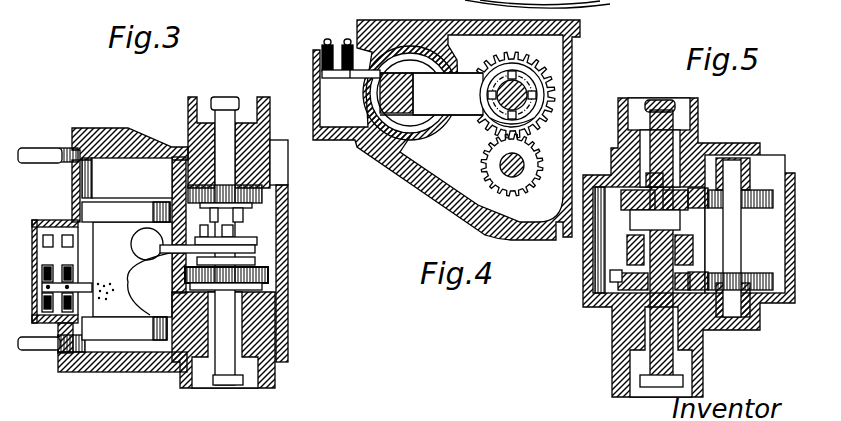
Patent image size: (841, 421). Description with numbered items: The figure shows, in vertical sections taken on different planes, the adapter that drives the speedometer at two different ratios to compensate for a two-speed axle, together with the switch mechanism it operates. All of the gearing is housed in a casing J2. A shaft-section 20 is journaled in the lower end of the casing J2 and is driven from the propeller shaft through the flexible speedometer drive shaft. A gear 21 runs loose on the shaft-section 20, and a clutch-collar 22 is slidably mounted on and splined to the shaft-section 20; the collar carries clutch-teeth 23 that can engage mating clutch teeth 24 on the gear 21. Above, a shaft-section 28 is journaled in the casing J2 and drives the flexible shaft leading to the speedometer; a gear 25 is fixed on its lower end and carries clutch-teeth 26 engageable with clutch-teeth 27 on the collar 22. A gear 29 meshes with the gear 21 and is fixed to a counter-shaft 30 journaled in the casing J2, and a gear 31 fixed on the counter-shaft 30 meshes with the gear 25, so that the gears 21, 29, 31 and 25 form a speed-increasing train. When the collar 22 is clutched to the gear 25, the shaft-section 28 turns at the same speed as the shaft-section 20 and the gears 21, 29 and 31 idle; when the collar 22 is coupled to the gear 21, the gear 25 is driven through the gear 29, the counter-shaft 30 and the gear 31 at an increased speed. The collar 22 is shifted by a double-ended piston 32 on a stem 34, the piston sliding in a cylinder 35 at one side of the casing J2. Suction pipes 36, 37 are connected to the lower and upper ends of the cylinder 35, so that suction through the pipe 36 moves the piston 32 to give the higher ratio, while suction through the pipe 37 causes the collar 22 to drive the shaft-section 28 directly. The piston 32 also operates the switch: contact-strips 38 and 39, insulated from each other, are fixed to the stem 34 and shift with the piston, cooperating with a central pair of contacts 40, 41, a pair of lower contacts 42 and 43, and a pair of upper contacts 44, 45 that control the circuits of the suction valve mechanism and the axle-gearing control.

In FIG. 3, the shaft-section 20 is at (232, 327).
In FIG. 5, the shaft-section 20 is at (658, 378).
In FIG. 3, the gear 21 is at (270, 275).
In FIG. 4, the gear 21 is at (540, 122).
In FIG. 5, the gear 21 is at (622, 290).
In FIG. 3, the clutch-collar 22 is at (262, 249).
In FIG. 4, the clutch-collar 22 is at (548, 88).
In FIG. 5, the clutch-collar 22 is at (620, 276).
In FIG. 3, the clutch-teeth 23 is at (262, 288).
In FIG. 3, the clutch teeth 24 is at (256, 261).
In FIG. 5, the clutch teeth 24 is at (698, 274).
In FIG. 3, the gear 25 is at (262, 194).
In FIG. 5, the gear 25 is at (613, 183).
In FIG. 3, the clutch-teeth 26 is at (250, 212).
In FIG. 5, the clutch-teeth 26 is at (633, 204).
In FIG. 3, the clutch-teeth 27 is at (258, 240).
In FIG. 4, the clutch-teeth 27 is at (538, 96).
In FIG. 5, the clutch-teeth 27 is at (680, 236).
In FIG. 3, the shaft-section 28 is at (232, 152).
In FIG. 4, the shaft-section 28 is at (535, 103).
In FIG. 5, the shaft-section 28 is at (680, 143).
In FIG. 4, the gear 29 is at (497, 182).
In FIG. 5, the gear 29 is at (756, 273).
In FIG. 4, the counter-shaft 30 is at (513, 178).
In FIG. 5, the counter-shaft 30 is at (743, 210).
In FIG. 5, the gear 31 is at (760, 176).
In FIG. 3, the double-ended piston 32 is at (126, 271).
In FIG. 4, the double-ended piston 32 is at (430, 138).
In FIG. 3, the stem 34 is at (151, 271).
In FIG. 3, the cylinder 35 is at (132, 178).
In FIG. 3, the suction pipe 36 is at (36, 351).
In FIG. 3, the suction pipe 37 is at (40, 146).
In FIG. 3, the contact-strip 38 is at (42, 288).
In FIG. 4, the contact-strip 38 is at (322, 73).
In FIG. 3, the contact-strip 39 is at (72, 274).
In FIG. 4, the contact-strip 39 is at (350, 78).
In FIG. 3, the central contact 40 is at (44, 266).
In FIG. 4, the central contact 40 is at (322, 60).
In FIG. 3, the central contact 41 is at (68, 268).
In FIG. 4, the central contact 41 is at (374, 60).
In FIG. 3, the lower contact 42 is at (40, 318).
In FIG. 3, the lower contact 43 is at (54, 334).
In FIG. 3, the upper contact 44 is at (46, 223).
In FIG. 3, the upper contact 45 is at (60, 221).
In FIG. 3, the casing J2 is at (102, 128).
In FIG. 4, the casing J2 is at (420, 190).
In FIG. 5, the casing J2 is at (598, 300).